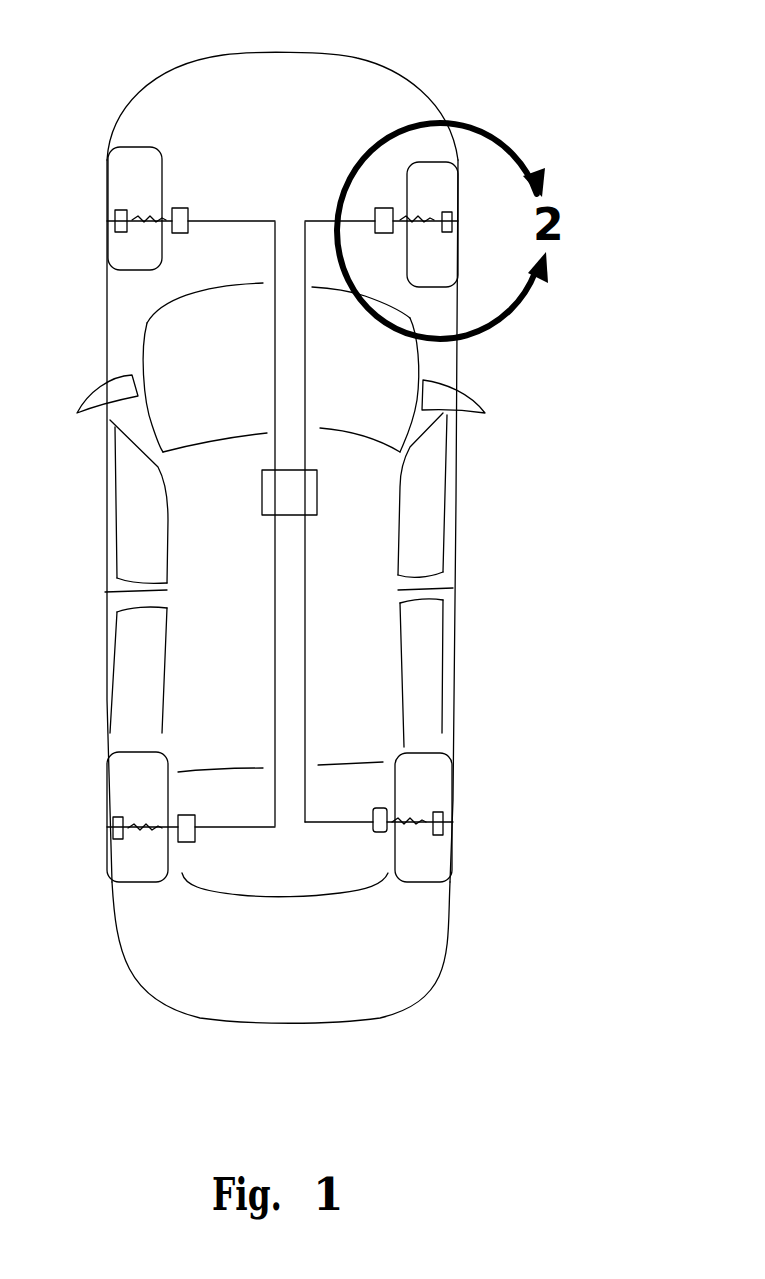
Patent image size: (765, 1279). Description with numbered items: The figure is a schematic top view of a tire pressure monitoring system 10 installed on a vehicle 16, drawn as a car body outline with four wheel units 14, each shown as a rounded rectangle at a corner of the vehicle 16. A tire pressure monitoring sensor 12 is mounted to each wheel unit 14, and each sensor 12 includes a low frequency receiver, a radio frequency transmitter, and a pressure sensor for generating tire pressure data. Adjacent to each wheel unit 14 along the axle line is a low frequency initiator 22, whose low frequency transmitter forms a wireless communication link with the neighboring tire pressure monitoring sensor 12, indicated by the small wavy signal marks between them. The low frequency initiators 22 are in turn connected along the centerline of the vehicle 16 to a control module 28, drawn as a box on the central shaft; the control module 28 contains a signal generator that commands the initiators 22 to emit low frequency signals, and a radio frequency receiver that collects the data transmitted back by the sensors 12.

The tire pressure monitoring system 10 is at (560, 445).
The tire pressure monitoring sensor 12 is at (127, 207).
The wheel unit 14 is at (127, 257).
The vehicle 16 is at (383, 63).
The low frequency initiator 22 is at (178, 208).
The control module 28 is at (317, 490).